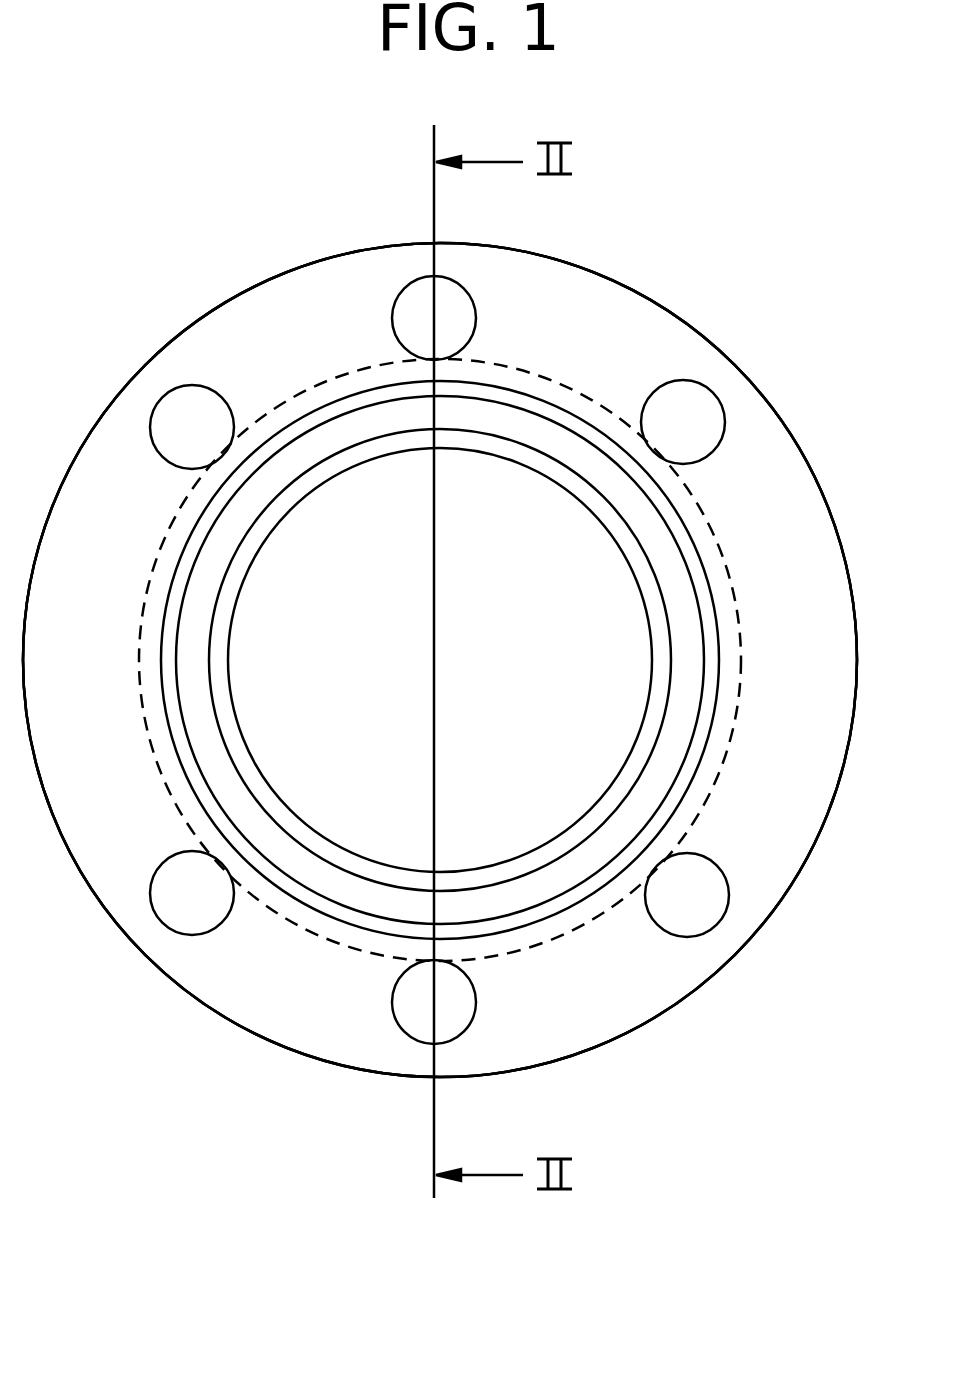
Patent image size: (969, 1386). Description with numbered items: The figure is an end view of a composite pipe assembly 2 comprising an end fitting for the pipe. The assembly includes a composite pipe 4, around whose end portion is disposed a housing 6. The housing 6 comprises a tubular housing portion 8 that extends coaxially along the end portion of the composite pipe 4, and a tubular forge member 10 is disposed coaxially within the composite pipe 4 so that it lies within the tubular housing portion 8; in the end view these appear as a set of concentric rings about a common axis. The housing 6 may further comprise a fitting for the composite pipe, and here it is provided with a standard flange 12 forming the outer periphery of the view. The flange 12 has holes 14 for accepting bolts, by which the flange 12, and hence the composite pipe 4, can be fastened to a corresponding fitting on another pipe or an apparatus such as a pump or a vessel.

The composite pipe assembly 2 is at (660, 201).
The composite pipe 4 is at (683, 600).
The housing 6 is at (205, 1115).
The tubular housing portion 8 is at (727, 710).
The tubular forge member 10 is at (317, 473).
The flange 12 is at (688, 323).
The holes 14 is at (730, 902).